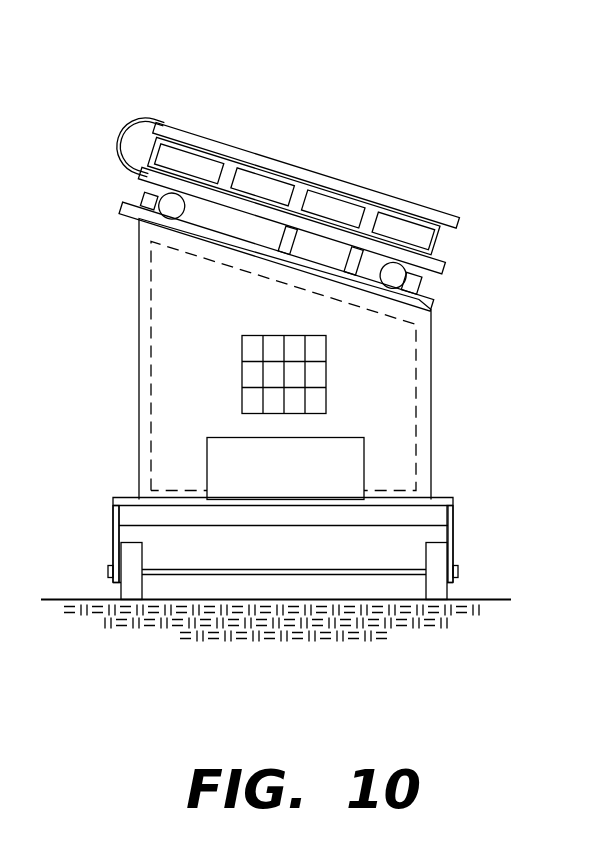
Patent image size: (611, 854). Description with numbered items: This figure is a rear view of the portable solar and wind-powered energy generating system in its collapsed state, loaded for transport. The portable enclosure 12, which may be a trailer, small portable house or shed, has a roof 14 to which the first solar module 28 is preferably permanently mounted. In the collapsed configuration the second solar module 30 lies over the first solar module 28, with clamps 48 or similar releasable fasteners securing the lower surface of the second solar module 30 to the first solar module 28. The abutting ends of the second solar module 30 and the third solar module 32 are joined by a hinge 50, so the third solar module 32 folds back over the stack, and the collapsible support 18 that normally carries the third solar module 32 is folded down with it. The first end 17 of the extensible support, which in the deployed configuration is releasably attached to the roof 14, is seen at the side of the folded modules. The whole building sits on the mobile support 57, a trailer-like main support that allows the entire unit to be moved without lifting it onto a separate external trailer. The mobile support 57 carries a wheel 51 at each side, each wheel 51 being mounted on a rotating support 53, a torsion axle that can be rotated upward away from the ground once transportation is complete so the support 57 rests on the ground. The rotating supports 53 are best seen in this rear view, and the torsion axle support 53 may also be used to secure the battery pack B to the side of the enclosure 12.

The portable enclosure 12 is at (287, 529).
The roof 14 is at (238, 250).
The first end of extensible support 17 is at (121, 212).
The collapsible support 18 is at (366, 175).
The first solar module 28 is at (363, 300).
The second solar module 30 is at (467, 248).
The third solar module 32 is at (437, 198).
The clamps 48 is at (134, 188).
The hinge 50 is at (123, 128).
The wheel 51 is at (121, 588).
The rotating support 53 is at (117, 548).
The mobile support 57 is at (180, 570).
The battery pack B is at (212, 436).